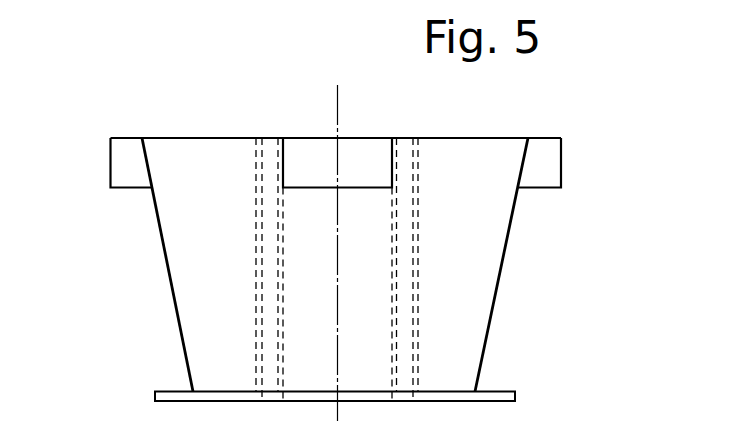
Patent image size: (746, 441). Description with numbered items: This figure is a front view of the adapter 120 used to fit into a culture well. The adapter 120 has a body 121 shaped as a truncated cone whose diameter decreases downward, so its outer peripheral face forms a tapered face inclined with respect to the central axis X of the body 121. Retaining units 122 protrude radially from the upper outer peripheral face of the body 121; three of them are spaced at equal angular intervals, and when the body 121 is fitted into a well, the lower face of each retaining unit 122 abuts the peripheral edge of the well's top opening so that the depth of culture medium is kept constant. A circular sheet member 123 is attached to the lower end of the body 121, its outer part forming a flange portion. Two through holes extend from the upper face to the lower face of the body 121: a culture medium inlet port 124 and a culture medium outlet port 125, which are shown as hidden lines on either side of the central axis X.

The adapter 120 is at (599, 156).
The body 121 is at (172, 295).
The retaining unit 122 is at (108, 163).
The sheet member 123 is at (155, 396).
The culture medium inlet port 124 is at (270, 148).
The culture medium outlet port 125 is at (407, 149).
The central axis X is at (339, 117).